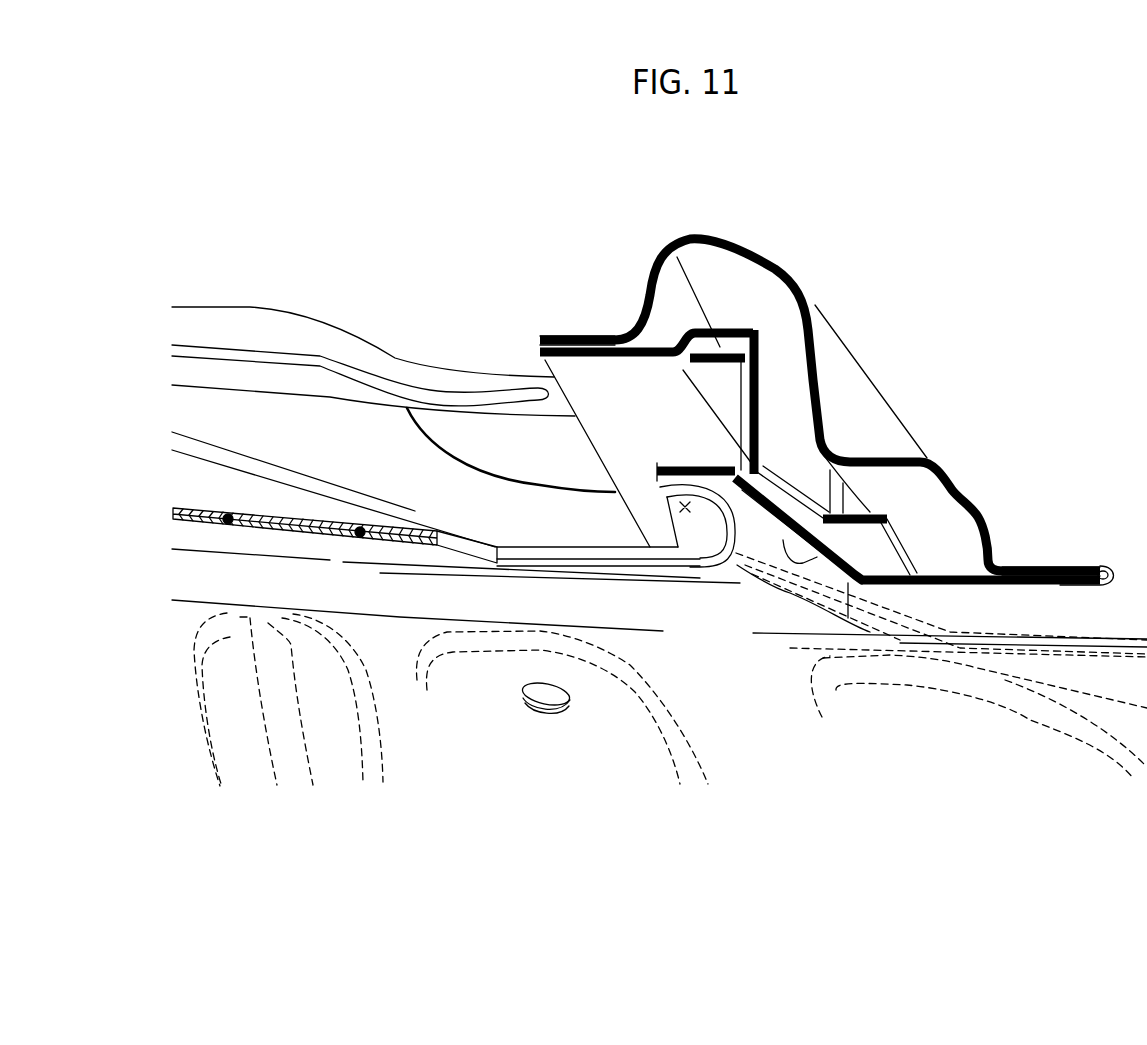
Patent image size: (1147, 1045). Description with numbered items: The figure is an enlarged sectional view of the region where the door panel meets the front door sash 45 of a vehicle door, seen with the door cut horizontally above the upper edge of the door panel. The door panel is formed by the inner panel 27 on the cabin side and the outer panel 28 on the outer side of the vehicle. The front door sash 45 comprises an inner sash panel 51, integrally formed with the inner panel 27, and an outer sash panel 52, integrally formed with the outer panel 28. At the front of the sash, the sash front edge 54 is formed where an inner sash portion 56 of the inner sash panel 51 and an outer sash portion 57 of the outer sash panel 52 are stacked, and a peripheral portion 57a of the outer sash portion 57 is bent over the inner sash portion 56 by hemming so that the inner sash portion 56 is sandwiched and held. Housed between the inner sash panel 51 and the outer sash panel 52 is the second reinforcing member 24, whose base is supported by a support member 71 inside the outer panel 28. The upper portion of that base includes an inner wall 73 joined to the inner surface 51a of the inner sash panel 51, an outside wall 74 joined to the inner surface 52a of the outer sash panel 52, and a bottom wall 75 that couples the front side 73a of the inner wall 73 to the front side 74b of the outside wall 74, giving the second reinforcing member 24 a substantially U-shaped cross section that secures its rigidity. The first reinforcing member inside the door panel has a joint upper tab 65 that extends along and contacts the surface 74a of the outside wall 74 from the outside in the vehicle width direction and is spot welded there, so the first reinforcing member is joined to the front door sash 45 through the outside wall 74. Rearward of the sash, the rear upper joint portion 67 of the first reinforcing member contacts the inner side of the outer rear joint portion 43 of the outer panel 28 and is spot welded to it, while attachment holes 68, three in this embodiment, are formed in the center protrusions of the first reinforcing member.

The second reinforcing member 24 is at (716, 356).
The inner panel 27 is at (320, 357).
The outer panel 28 is at (400, 606).
The outer rear joint portion 43 is at (302, 550).
The front door sash 45 is at (837, 385).
The inner sash panel 51 is at (837, 387).
The inner surface of the inner sash panel 51a is at (572, 340).
The outer sash panel 52 is at (878, 485).
The inner surface of the outer sash panel 52a is at (720, 466).
The sash front edge 54 is at (1070, 603).
The inner sash portion 56 is at (1063, 567).
The outer sash portion 57 is at (1040, 598).
The peripheral portion 57a is at (1087, 563).
The joint upper tab 65 is at (697, 520).
The rear upper joint portion 67 is at (297, 517).
The attachment holes 68 is at (543, 710).
The support member 71 is at (780, 412).
The inner wall 73 is at (620, 386).
The front side of the inner wall 73a is at (752, 338).
The outside wall 74 is at (660, 490).
The surface of the outside wall 74a is at (667, 494).
The front side of the outside wall 74b is at (756, 492).
The bottom wall 75 is at (760, 398).